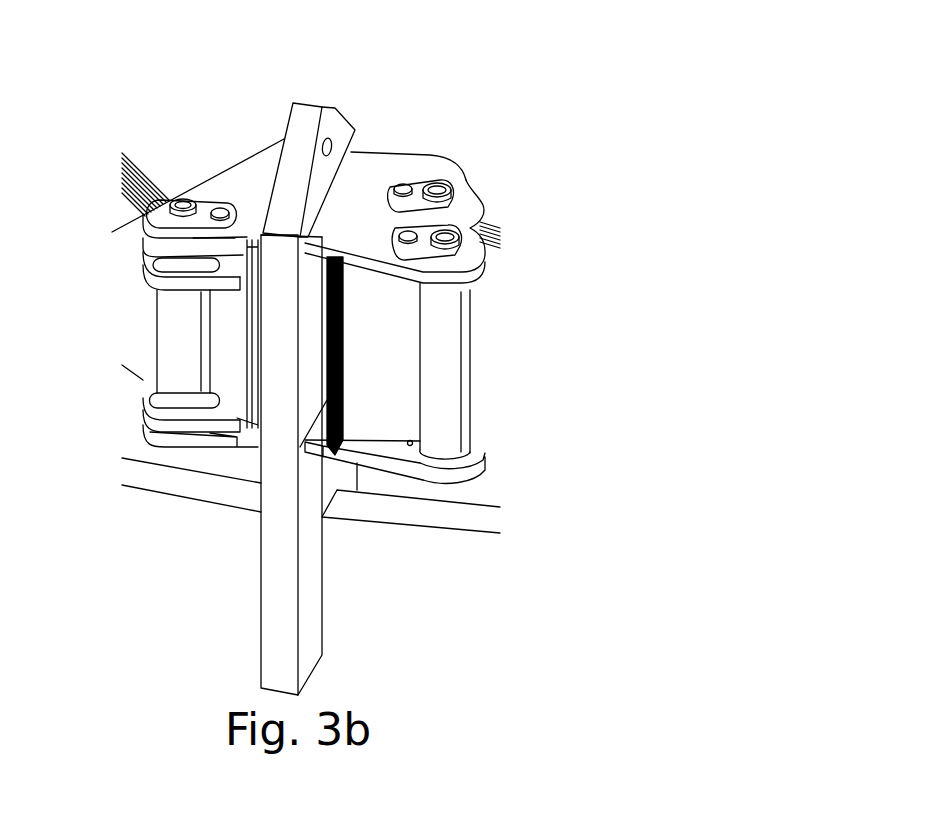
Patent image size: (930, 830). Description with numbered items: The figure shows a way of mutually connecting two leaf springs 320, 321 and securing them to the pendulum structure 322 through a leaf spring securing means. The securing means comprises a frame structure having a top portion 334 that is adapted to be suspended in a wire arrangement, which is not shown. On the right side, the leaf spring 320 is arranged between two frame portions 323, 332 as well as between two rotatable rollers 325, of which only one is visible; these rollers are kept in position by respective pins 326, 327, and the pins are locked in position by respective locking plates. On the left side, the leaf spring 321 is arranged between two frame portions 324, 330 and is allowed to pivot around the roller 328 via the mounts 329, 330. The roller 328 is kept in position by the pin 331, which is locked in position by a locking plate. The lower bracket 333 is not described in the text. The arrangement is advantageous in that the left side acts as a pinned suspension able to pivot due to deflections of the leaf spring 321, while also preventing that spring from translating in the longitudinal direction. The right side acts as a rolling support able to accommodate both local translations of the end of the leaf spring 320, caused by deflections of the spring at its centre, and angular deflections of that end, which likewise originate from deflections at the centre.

The leaf spring 320 is at (495, 338).
The leaf spring 321 is at (143, 165).
The pendulum structure 322 is at (453, 627).
The frame portion 323 is at (393, 170).
The frame portion 324 is at (238, 178).
The rotatable roller 325 is at (457, 402).
The pin 326 is at (460, 250).
The pin 327 is at (458, 183).
The roller 328 is at (153, 325).
The mount 329 is at (150, 392).
The frame portion / mount 330 is at (138, 268).
The pin 331 is at (150, 200).
The frame portion 332 is at (407, 457).
The lower bracket 333 is at (213, 433).
The top portion 334 is at (325, 107).